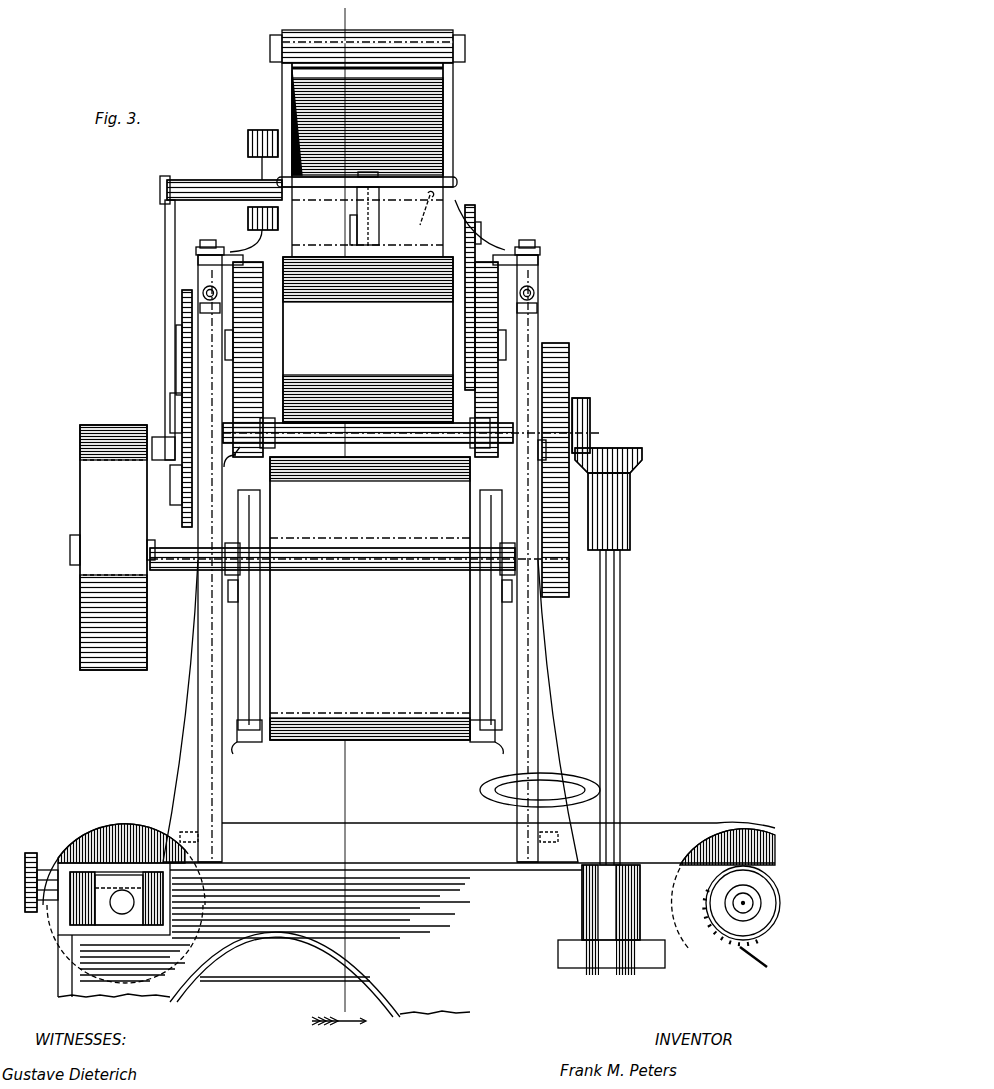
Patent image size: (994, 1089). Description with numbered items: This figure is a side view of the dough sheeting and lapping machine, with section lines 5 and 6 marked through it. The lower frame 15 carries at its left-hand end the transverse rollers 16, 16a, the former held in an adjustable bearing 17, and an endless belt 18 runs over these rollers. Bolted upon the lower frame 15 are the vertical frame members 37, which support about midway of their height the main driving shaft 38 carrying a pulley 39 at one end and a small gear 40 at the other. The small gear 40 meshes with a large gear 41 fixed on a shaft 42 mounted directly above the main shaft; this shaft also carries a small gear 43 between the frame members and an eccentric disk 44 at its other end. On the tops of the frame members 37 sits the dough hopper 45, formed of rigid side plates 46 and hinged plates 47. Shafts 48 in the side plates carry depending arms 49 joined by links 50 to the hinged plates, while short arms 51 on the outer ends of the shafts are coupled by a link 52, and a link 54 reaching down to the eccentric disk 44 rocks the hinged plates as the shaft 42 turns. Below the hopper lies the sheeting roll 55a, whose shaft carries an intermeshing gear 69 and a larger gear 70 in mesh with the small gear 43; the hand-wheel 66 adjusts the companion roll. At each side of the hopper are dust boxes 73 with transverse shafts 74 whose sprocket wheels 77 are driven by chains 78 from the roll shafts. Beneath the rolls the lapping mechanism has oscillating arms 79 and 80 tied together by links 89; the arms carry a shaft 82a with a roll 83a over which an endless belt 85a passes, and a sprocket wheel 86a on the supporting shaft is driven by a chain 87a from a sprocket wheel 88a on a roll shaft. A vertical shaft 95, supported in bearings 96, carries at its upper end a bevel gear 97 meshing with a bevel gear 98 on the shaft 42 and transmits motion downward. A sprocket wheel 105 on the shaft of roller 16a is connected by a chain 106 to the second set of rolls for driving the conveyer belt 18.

The section line 5 is at (339, 1011).
The section line 6 is at (351, 510).
The lower frame 15 is at (50, 995).
The transverse roller 16 is at (125, 840).
The transverse roller 16a is at (732, 835).
The adjustable bearing 17 is at (97, 894).
The endless belt 18 is at (285, 910).
The vertical frame member 37 is at (200, 670).
The main driving shaft 38 is at (184, 571).
The pulley 39 is at (83, 505).
The small gear 40 is at (558, 598).
The large gear 41 is at (569, 358).
The shaft 42 is at (490, 443).
The small gear 43 is at (234, 462).
The eccentric disk 44 is at (172, 403).
The dough hopper 45 is at (367, 97).
The side plate 46 is at (283, 97).
The hinged plate 47 is at (367, 171).
The shaft 48 is at (419, 217).
The depending arm 49 is at (379, 212).
The link 50 is at (355, 228).
The short arm 51 is at (258, 160).
The link 52 is at (250, 176).
The link 54 is at (166, 270).
The sheeting roll 55a is at (368, 340).
The hand-wheel 66 is at (568, 783).
The intermeshing gear 69 is at (500, 300).
The larger gear 70 is at (248, 326).
The dust box 73 is at (367, 222).
The transverse shaft 74 is at (472, 206).
The sprocket wheel 77 is at (478, 222).
The chain 78 is at (480, 256).
The oscillating arm 79 is at (478, 650).
The oscillating arm 80 is at (262, 645).
The shaft 82a is at (265, 745).
The roll 83a is at (248, 742).
The endless belt 85a is at (370, 598).
The sprocket wheel 86a is at (183, 518).
The chain 87a is at (180, 365).
The sprocket wheel 88a is at (183, 305).
The link 89 is at (226, 598).
The vertical shaft 95 is at (621, 672).
The bearing 96 is at (631, 530).
The bevel gear 97 is at (643, 458).
The bevel gear 98 is at (592, 416).
The sprocket wheel 105 is at (717, 915).
The chain 106 is at (741, 965).